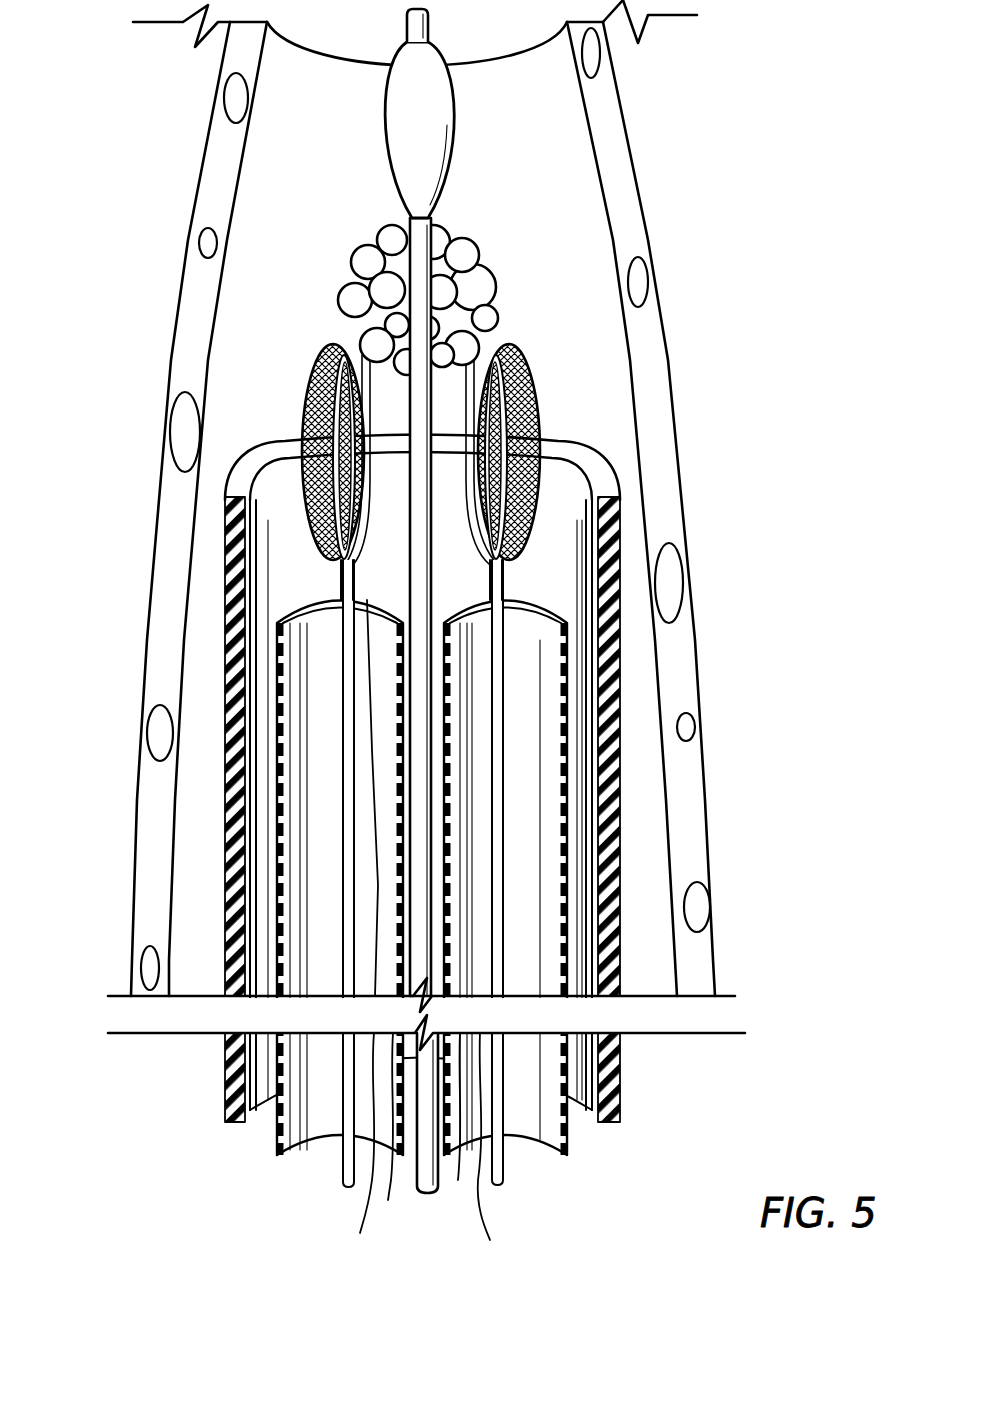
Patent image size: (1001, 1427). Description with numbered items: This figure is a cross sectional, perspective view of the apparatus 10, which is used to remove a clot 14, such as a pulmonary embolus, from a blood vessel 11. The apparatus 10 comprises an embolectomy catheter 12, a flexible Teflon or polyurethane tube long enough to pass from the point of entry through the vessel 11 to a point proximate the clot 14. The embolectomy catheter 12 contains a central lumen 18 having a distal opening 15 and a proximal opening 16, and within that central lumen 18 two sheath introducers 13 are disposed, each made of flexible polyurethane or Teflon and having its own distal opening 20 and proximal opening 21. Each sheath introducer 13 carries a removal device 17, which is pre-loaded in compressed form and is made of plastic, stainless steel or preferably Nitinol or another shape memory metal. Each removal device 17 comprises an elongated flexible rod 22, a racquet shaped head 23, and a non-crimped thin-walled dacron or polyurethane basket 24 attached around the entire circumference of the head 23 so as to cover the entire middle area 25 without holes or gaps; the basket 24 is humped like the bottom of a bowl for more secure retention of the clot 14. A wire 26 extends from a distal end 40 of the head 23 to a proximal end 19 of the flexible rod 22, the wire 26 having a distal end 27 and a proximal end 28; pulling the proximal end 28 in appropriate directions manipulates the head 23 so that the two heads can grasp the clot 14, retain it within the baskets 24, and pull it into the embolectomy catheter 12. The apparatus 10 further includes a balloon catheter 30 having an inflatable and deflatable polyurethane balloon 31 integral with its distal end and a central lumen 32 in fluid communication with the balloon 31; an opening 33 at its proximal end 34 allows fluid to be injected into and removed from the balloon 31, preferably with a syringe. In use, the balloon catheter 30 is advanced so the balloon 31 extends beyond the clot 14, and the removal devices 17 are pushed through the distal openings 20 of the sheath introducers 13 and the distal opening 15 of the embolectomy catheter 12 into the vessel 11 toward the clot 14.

The apparatus 10 is at (422, 723).
The blood vessel 11 is at (633, 163).
The embolectomy catheter 12 is at (623, 917).
The sheath introducer 13 is at (655, 650).
The clot 14 is at (480, 292).
The distal opening 15 is at (551, 425).
The proximal opening 16 is at (608, 1128).
The removal device 17 is at (532, 753).
The central lumen 18 is at (566, 483).
The proximal end 19 is at (345, 1187).
The distal opening 20 is at (297, 623).
The proximal opening 21 is at (533, 1152).
The elongated flexible rod 22 is at (340, 935).
The racquet shaped head 23 is at (308, 525).
The basket 24 is at (300, 477).
The middle area 25 is at (345, 420).
The wire 26 is at (377, 855).
The distal end 27 is at (343, 343).
The proximal end 28 is at (363, 1223).
The balloon catheter 30 is at (378, 208).
The balloon 31 is at (396, 140).
The central lumen 32 is at (425, 255).
The opening 33 is at (427, 1195).
The proximal end 34 is at (417, 1197).
The distal end 40 is at (338, 348).